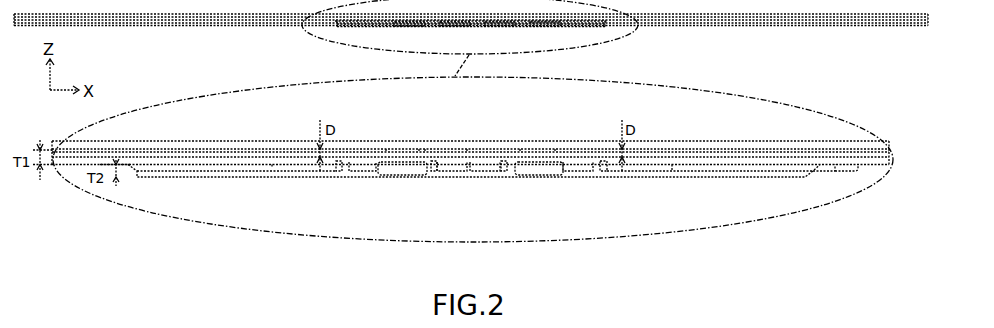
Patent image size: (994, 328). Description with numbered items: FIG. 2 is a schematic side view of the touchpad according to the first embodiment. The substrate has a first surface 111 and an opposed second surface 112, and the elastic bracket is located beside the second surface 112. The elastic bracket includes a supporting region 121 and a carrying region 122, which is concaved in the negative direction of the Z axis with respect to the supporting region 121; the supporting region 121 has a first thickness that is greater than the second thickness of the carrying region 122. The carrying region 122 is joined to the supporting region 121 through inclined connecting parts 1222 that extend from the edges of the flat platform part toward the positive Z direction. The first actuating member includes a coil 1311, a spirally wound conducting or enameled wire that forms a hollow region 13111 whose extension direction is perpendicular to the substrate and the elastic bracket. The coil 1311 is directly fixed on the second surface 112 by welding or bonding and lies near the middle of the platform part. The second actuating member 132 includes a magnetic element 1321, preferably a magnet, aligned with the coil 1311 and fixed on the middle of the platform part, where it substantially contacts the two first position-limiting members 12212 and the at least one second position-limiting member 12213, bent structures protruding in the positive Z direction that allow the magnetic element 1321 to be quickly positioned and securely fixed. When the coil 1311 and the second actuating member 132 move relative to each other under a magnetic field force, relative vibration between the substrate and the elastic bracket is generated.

The first surface 111 is at (710, 141).
The second surface 112 is at (747, 151).
The coil 1311 is at (457, 149).
The hollow region 13111 is at (425, 149).
The supporting region 121 is at (815, 165).
The carrying region 122 is at (700, 180).
The connecting part 1222 is at (835, 168).
The first position-limiting member 12212 is at (337, 166).
The second position-limiting member 12213 is at (398, 166).
The second actuating member 132 is at (470, 187).
The magnetic element 1321 is at (470, 163).